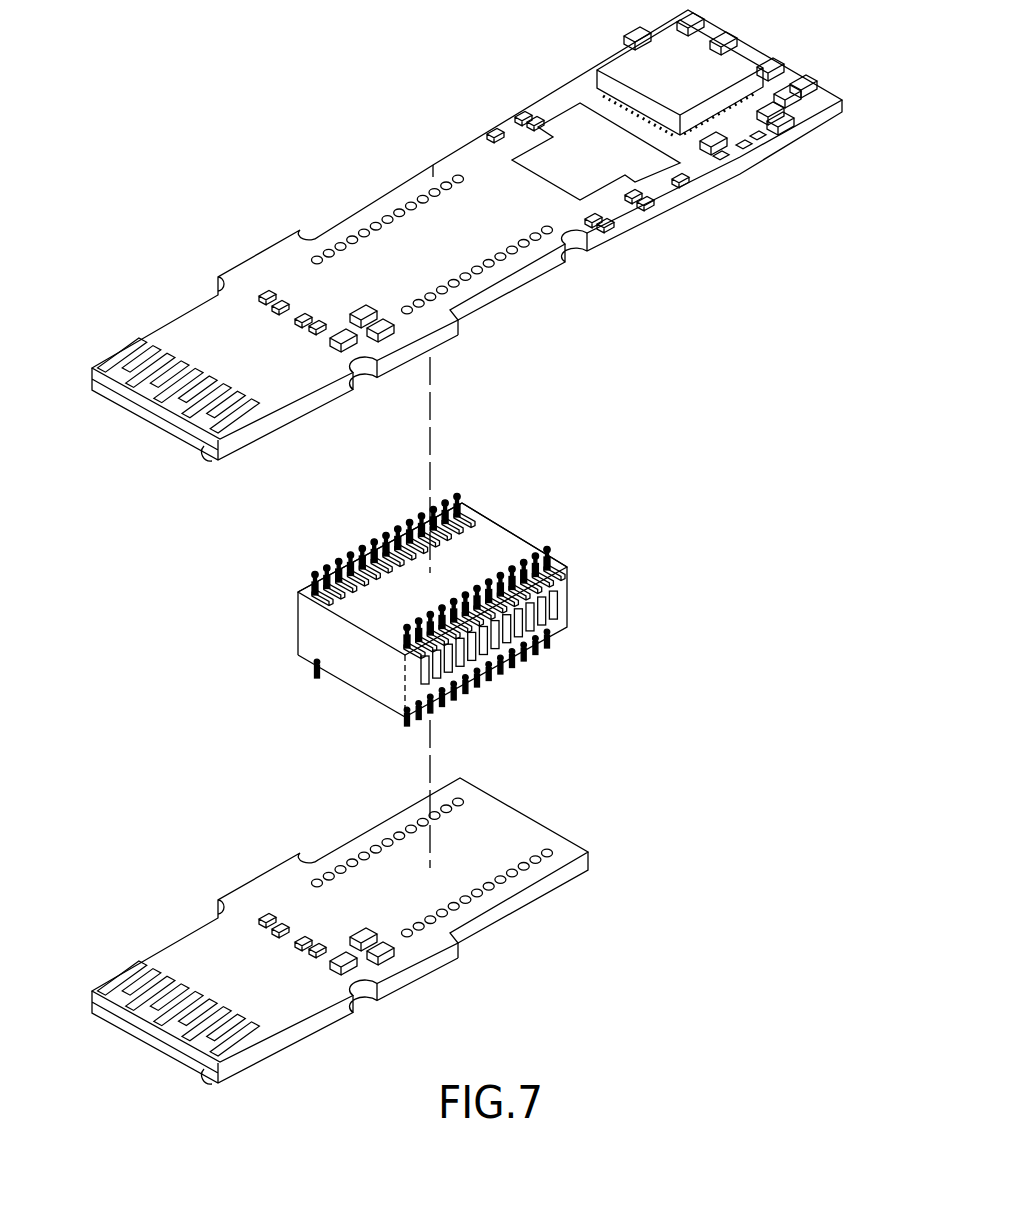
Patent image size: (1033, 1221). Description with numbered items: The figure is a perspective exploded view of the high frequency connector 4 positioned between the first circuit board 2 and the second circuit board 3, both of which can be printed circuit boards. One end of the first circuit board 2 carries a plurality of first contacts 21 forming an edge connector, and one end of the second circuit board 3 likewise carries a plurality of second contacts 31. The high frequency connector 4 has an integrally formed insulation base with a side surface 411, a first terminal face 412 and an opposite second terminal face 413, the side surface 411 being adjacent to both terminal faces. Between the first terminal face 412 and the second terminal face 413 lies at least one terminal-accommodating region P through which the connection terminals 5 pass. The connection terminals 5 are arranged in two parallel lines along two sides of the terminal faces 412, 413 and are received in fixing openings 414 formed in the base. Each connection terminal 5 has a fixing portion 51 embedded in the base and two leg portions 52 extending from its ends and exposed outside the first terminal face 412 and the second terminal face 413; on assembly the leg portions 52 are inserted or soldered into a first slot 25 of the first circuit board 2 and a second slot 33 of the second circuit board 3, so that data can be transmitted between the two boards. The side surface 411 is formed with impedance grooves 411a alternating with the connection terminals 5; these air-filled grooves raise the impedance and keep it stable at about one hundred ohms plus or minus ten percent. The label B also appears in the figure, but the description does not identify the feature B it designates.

The first circuit board 2 is at (467, 249).
The first contacts 21 is at (190, 413).
The first slot 25 is at (350, 238).
The second circuit board 3 is at (336, 936).
The second contacts 31 is at (152, 1015).
The second slot 33 is at (360, 860).
The high frequency connector 4 is at (414, 605).
The side surface 411 is at (562, 598).
The impedance grooves 411a is at (553, 603).
The first terminal face 412 is at (333, 603).
The second terminal face 413 is at (353, 687).
The fixing openings 414 is at (560, 562).
The connection terminals 5 is at (448, 621).
The fixing portion 51 is at (460, 698).
The leg portions 52 is at (427, 717).
The terminal-accommodating region P is at (445, 527).
The top surface of connector B is at (480, 560).